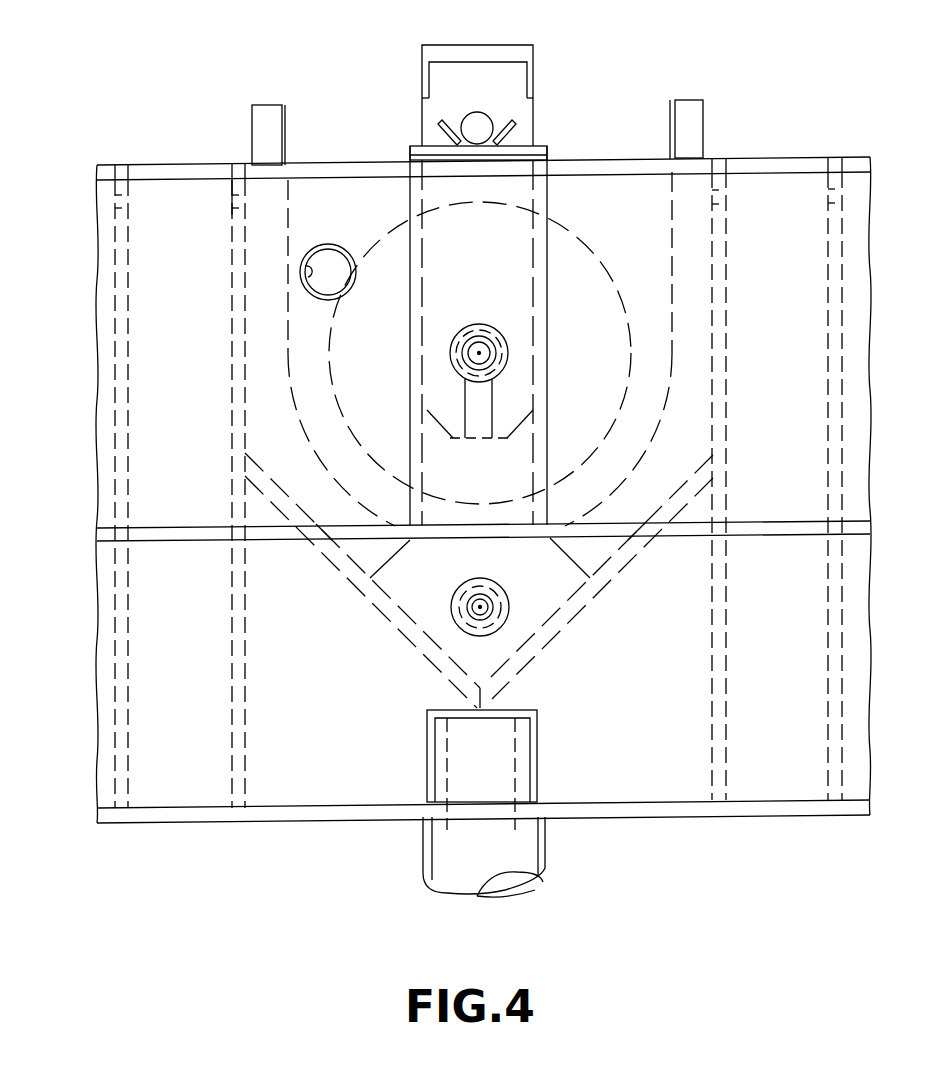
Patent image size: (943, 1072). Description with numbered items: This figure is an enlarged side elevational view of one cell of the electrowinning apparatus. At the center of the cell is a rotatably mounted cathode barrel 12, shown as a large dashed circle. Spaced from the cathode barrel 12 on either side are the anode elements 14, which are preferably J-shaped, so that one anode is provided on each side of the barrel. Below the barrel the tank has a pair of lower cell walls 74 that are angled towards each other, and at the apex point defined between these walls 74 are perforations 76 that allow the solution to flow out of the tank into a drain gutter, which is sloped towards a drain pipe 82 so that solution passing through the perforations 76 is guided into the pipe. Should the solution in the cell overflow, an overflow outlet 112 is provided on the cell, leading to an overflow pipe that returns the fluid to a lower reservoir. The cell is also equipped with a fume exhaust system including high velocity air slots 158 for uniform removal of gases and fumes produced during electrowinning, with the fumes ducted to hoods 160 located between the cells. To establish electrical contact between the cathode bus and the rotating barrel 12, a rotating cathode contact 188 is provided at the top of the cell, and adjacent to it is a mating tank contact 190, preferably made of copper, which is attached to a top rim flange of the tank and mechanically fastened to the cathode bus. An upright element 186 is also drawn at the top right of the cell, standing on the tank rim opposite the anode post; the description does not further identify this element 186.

The cathode barrel 12 is at (556, 222).
The anode elements 14 is at (265, 101).
The lower cell walls 74 is at (340, 562).
The perforations 76 is at (484, 708).
The drain pipe 82 is at (530, 845).
The overflow outlet 112 is at (305, 270).
The high velocity air slots 158 is at (232, 198).
The hoods 160 is at (165, 440).
The post 186 is at (687, 140).
The rotating cathode contact 188 is at (486, 118).
The tank contact 190 is at (445, 136).